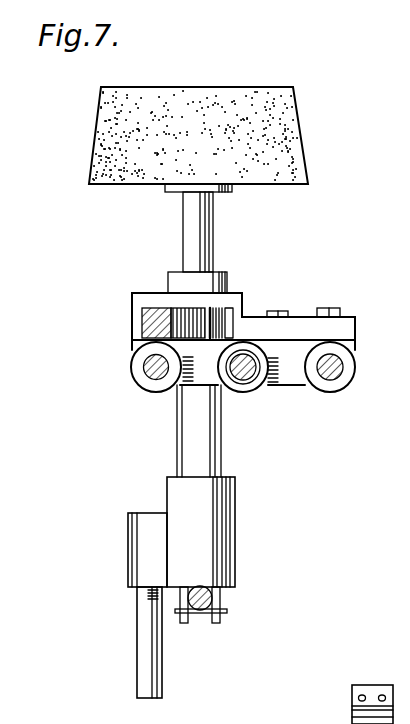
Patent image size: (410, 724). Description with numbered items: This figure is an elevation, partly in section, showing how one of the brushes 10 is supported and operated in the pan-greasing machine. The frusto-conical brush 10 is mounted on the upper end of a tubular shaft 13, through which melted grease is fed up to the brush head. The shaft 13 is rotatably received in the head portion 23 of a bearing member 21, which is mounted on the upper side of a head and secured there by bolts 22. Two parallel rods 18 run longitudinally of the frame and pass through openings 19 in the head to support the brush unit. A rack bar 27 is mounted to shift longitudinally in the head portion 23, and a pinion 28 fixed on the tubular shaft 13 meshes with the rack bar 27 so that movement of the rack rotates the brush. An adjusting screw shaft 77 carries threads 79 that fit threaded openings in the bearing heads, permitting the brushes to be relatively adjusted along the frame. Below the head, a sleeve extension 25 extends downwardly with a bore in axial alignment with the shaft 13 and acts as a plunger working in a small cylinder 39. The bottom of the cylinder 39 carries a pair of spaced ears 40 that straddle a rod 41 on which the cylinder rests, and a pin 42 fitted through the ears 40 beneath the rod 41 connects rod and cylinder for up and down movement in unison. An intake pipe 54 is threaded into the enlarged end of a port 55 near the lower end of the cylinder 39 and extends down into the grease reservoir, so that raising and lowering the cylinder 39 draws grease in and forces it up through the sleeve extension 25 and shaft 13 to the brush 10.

The brush 10 is at (238, 90).
The tubular shaft 13 is at (203, 212).
The pinion 28 is at (210, 310).
The head portion 23 is at (242, 298).
The rack bar 27 is at (142, 316).
The bearing member 21 is at (257, 323).
The bolt 22 is at (335, 308).
The rod 18 is at (144, 371).
The opening 19 is at (341, 372).
The adjusting screw shaft 77 is at (249, 372).
The threads 79 is at (250, 375).
The sleeve extension 25 is at (193, 433).
The cylinder 39 is at (217, 541).
The port 55 is at (142, 562).
The intake pipe 54 is at (148, 672).
The rod 41 is at (187, 592).
The pin 42 is at (228, 612).
The ear 40 is at (187, 627).